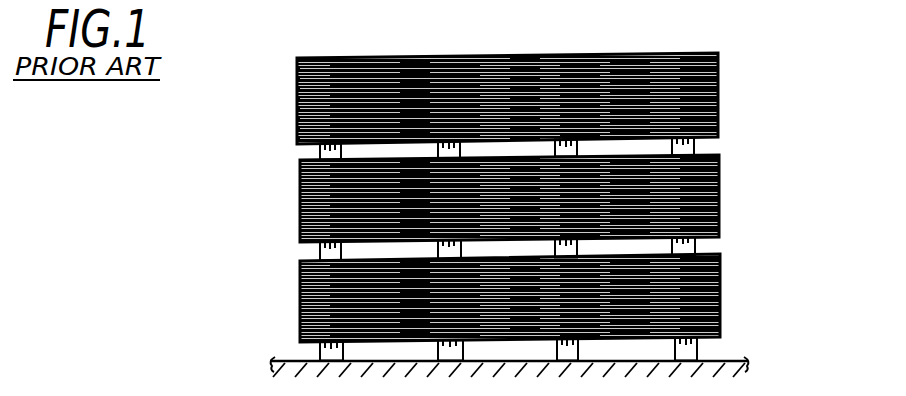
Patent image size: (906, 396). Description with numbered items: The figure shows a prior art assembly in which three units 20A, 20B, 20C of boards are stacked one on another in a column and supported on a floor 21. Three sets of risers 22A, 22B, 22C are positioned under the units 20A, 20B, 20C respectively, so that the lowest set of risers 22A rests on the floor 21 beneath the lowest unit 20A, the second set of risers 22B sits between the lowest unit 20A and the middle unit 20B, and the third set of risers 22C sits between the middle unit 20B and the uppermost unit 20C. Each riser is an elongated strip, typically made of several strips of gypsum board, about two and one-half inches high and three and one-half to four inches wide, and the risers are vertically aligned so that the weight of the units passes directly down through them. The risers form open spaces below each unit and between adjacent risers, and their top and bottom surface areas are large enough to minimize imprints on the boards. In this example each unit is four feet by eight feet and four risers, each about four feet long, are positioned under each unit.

The unit of boards 20A is at (720, 287).
The unit of boards 20B is at (719, 183).
The unit of boards 20C is at (718, 88).
The floor 21 is at (712, 352).
The set of risers 22A is at (319, 350).
The set of risers 22B is at (319, 250).
The set of risers 22C is at (319, 152).